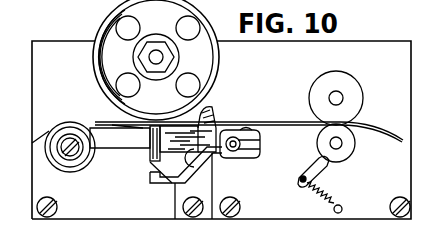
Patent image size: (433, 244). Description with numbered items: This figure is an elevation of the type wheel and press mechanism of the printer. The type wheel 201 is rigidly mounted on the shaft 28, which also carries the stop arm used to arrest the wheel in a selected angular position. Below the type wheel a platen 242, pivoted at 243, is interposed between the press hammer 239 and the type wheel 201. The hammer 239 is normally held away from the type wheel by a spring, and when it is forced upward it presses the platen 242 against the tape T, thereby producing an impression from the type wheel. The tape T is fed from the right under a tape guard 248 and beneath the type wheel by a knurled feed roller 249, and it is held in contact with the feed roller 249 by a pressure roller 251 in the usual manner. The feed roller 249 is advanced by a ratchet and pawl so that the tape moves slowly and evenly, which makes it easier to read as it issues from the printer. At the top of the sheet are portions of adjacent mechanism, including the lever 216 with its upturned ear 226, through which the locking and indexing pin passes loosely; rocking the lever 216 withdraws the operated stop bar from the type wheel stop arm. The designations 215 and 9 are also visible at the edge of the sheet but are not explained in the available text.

The type wheel 201 is at (207, 60).
The shaft 28 is at (156, 65).
The tape T is at (88, 122).
The pivot 243 is at (57, 154).
The platen 242 is at (155, 150).
The tape guard 248 is at (206, 118).
The press hammer 239 is at (200, 165).
The knurled feed roller 249 is at (351, 85).
The pressure roller 251 is at (351, 150).
The upturned ear 226 is at (50, 0).
The component of adjacent figure 9 is at (3, 0).
The lever 216 is at (366, 0).
The component of adjacent figure 215 is at (412, 0).